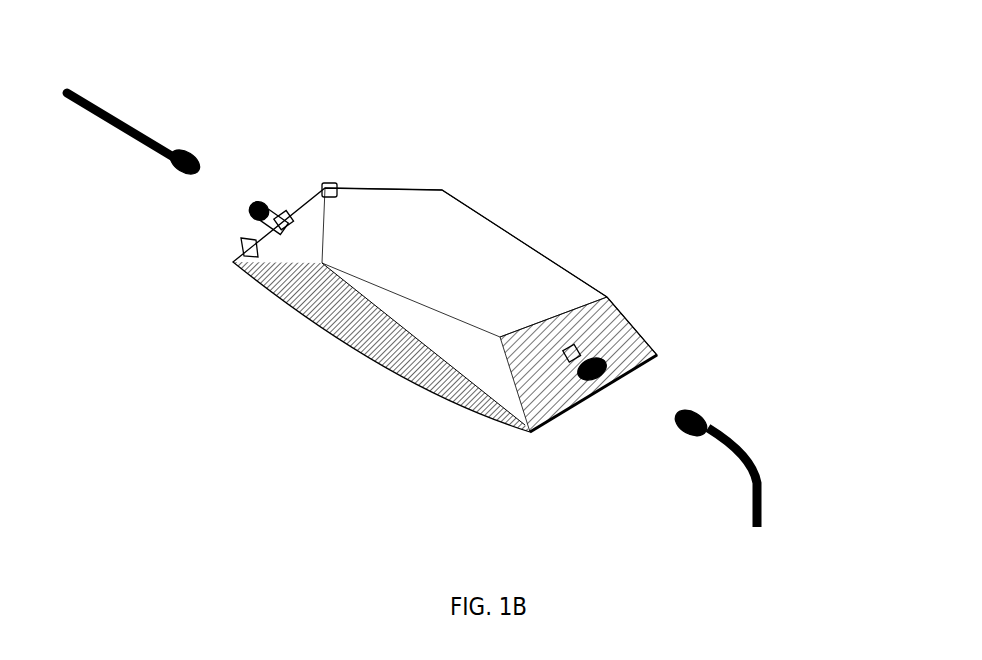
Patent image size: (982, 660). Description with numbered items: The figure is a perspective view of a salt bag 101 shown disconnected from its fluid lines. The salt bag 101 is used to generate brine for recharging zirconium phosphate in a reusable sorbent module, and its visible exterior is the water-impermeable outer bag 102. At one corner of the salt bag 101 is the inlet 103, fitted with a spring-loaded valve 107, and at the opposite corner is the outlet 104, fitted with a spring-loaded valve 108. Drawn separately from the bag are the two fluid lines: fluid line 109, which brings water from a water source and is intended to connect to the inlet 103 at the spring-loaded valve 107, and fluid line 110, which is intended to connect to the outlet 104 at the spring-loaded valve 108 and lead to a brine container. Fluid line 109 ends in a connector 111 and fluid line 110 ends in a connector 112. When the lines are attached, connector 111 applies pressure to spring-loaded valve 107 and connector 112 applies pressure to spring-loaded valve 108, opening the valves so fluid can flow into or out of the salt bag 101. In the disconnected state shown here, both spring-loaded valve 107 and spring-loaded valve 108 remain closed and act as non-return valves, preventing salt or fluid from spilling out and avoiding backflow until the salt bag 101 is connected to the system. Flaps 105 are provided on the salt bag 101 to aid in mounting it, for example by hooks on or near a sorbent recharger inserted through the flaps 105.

The salt bag 101 is at (445, 311).
The outer bag 102 is at (512, 250).
The inlet 103 is at (292, 218).
The outlet 104 is at (565, 348).
The flaps 105 is at (328, 192).
The spring-loaded valve 107 is at (268, 202).
The spring-loaded valve 108 is at (590, 360).
The fluid line 109 is at (122, 128).
The fluid line 110 is at (762, 480).
The connector 111 is at (188, 148).
The connector 112 is at (703, 418).